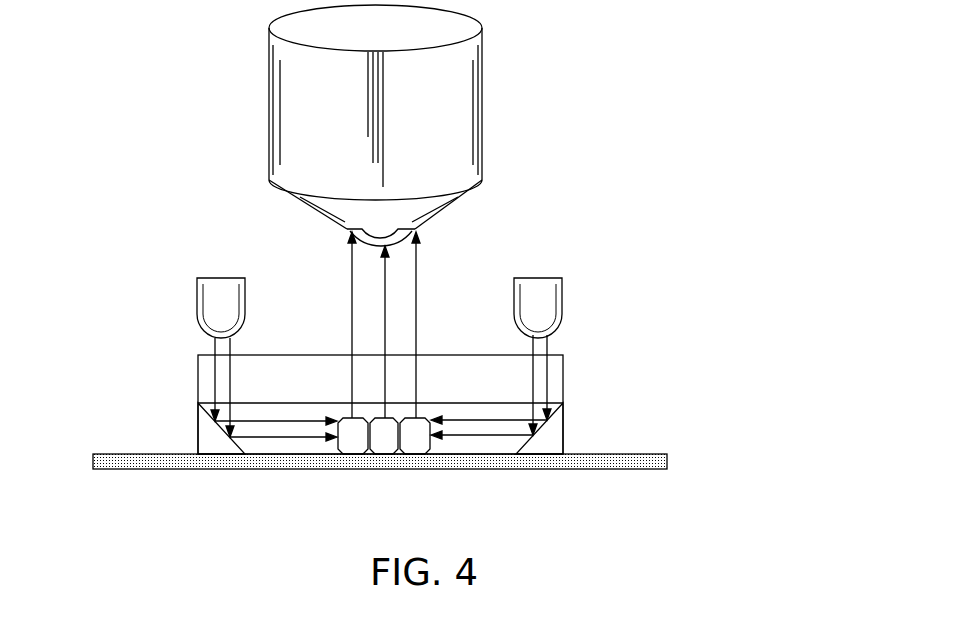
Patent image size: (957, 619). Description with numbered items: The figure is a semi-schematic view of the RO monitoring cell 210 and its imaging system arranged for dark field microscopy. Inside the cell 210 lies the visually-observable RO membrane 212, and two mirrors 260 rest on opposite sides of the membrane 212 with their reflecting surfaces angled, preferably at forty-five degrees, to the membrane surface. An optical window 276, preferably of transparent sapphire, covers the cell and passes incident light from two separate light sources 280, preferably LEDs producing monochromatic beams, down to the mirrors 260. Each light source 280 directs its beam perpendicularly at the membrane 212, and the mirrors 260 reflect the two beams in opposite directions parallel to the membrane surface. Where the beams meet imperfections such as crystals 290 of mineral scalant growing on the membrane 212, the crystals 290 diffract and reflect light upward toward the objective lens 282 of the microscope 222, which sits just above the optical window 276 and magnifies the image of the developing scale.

The RO monitoring cell 210 is at (155, 403).
The RO membrane 212 is at (163, 470).
The optical imaging device 222 is at (468, 117).
The mirrors 260 is at (197, 445).
The optical window 276 is at (565, 364).
The light sources 280 is at (232, 278).
The objective lens 282 is at (392, 246).
The crystals 290 is at (412, 448).